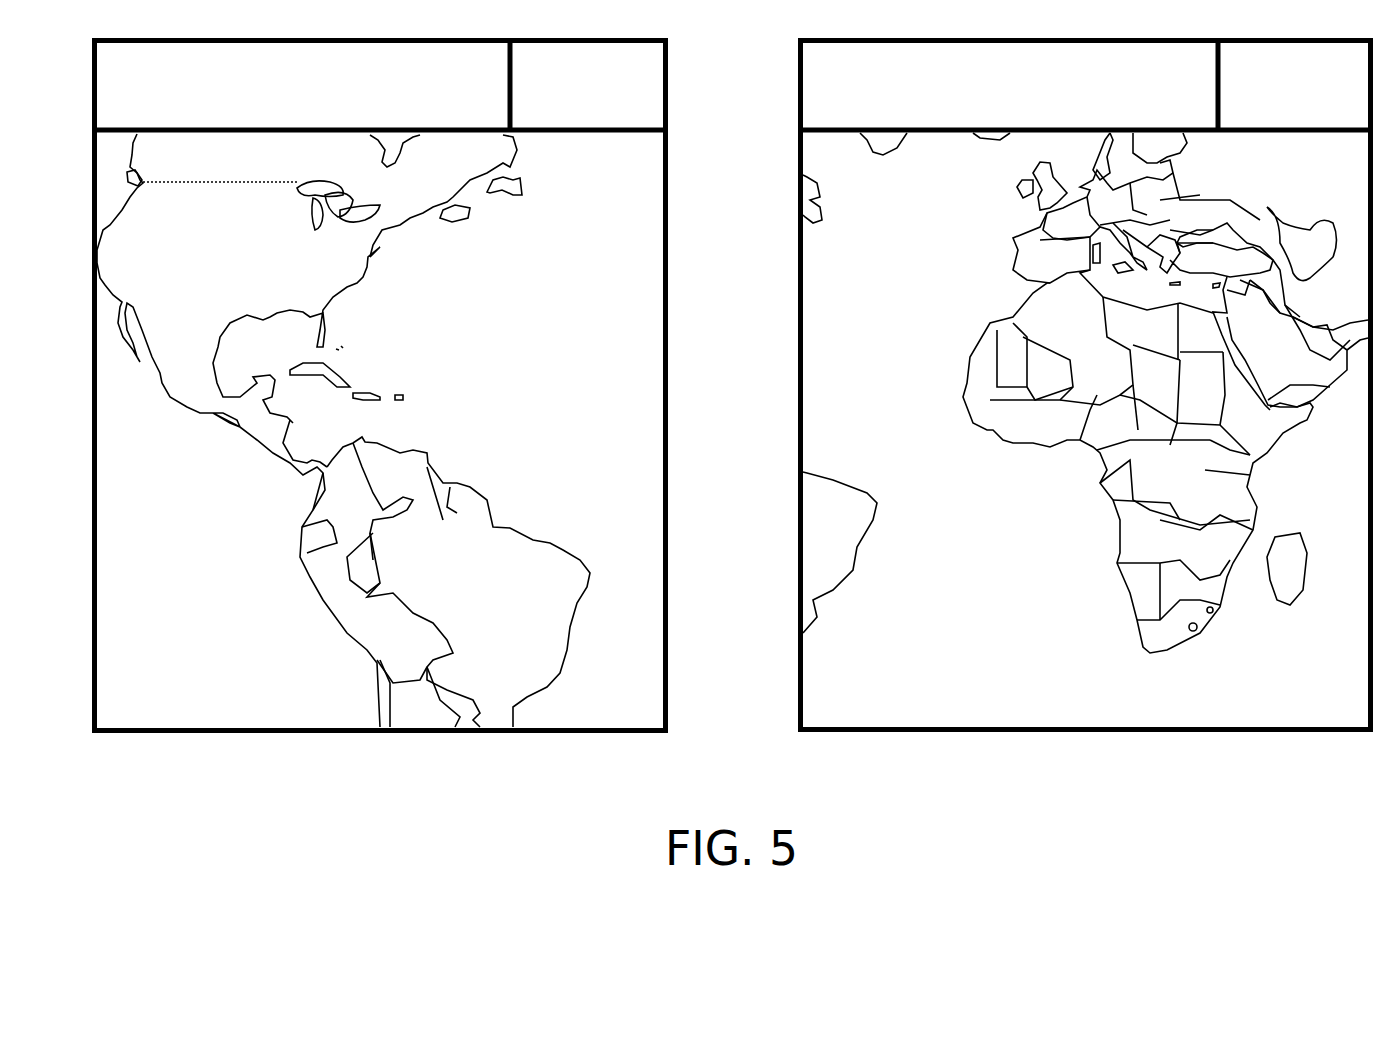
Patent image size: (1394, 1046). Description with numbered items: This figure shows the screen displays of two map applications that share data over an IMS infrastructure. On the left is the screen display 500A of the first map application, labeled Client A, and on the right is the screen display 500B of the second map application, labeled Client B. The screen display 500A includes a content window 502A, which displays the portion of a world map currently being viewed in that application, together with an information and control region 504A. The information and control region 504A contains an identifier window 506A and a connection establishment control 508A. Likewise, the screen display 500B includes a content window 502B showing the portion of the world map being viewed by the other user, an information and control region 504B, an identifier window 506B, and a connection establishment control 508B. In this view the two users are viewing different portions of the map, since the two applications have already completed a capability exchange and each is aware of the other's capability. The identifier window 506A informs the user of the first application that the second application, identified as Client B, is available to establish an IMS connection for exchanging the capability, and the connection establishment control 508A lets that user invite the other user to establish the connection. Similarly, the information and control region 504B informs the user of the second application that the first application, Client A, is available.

The screen display 500A is at (208, 758).
The screen display 500B is at (943, 758).
The content window 502A is at (198, 693).
The content window 502B is at (901, 693).
The information and control region 504A is at (686, 84).
The information and control region 504B is at (775, 84).
The identifier window 506A is at (465, 100).
The identifier window 506B is at (1177, 100).
The connection establishment control 508A is at (558, 123).
The connection establishment control 508B is at (1266, 123).